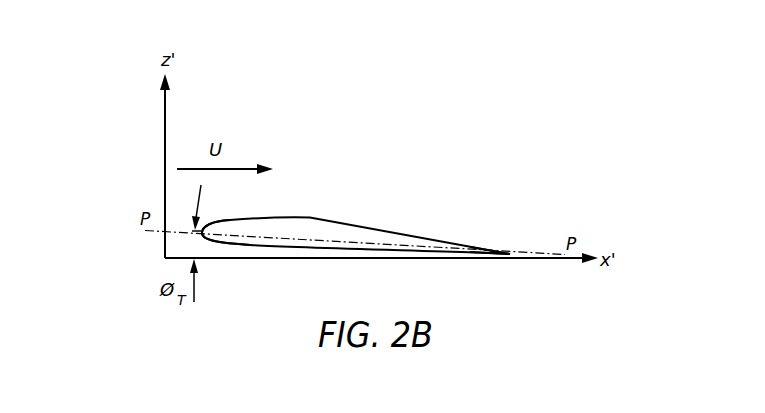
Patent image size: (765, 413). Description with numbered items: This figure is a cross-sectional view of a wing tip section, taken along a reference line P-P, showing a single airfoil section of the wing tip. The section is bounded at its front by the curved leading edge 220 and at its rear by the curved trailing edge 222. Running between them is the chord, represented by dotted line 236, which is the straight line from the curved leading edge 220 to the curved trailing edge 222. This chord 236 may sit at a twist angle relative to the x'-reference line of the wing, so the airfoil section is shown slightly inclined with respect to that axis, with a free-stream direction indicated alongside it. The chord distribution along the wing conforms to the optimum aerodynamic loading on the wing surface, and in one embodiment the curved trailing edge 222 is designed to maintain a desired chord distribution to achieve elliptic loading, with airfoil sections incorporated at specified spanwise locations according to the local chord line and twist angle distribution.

The curved leading edge 220 is at (184, 215).
The curved trailing edge 222 is at (510, 257).
The chord 236 is at (383, 243).